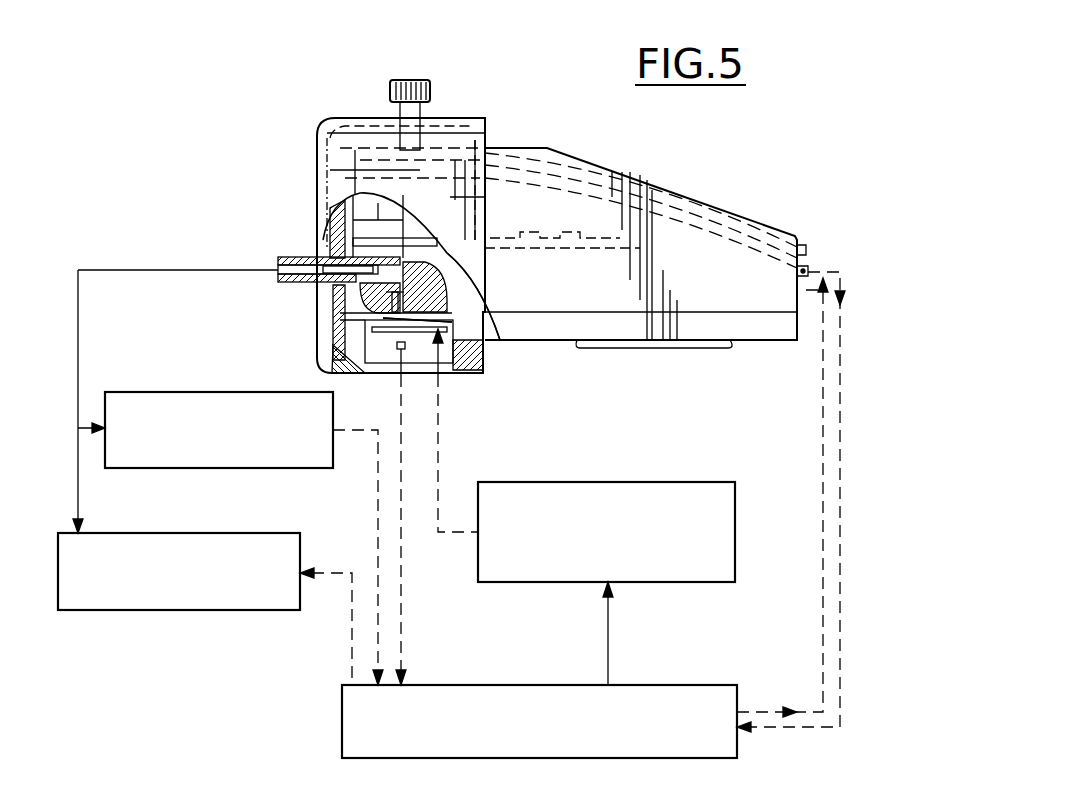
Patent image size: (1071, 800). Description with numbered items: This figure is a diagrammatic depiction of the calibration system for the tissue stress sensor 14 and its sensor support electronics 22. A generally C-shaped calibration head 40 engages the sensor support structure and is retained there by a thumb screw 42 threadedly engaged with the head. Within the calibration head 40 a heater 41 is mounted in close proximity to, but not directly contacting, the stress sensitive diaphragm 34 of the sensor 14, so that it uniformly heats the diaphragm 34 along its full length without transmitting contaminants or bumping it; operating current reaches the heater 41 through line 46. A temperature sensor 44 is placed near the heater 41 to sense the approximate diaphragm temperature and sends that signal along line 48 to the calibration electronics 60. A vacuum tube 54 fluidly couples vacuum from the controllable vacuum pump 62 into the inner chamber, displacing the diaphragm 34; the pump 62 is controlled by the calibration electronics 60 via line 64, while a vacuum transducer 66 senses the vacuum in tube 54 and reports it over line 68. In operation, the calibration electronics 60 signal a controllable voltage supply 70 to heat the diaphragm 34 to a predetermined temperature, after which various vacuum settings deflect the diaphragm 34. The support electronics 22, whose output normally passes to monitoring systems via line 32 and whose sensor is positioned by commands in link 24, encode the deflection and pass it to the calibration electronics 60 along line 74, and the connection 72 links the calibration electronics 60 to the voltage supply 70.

The tissue stress sensor 14 is at (492, 280).
The sensor support electronics 22 is at (530, 190).
The link 24 is at (802, 243).
The line 32 is at (806, 270).
The diaphragm 34 is at (415, 318).
The calibration head 40 is at (317, 146).
The heater 41 is at (486, 348).
The thumb screw 42 is at (430, 91).
The temperature sensor 44 is at (397, 345).
The line 46 is at (440, 436).
The line 48 is at (400, 408).
The vacuum tube 54 is at (298, 256).
The calibration electronics 60 is at (491, 685).
The controllable vacuum pump 62 is at (161, 533).
The line 64 is at (351, 624).
The vacuum transducer 66 is at (144, 392).
The line 68 is at (378, 514).
The controllable voltage supply 70 is at (672, 472).
The supply control line 72 is at (610, 638).
The line 74 is at (840, 516).